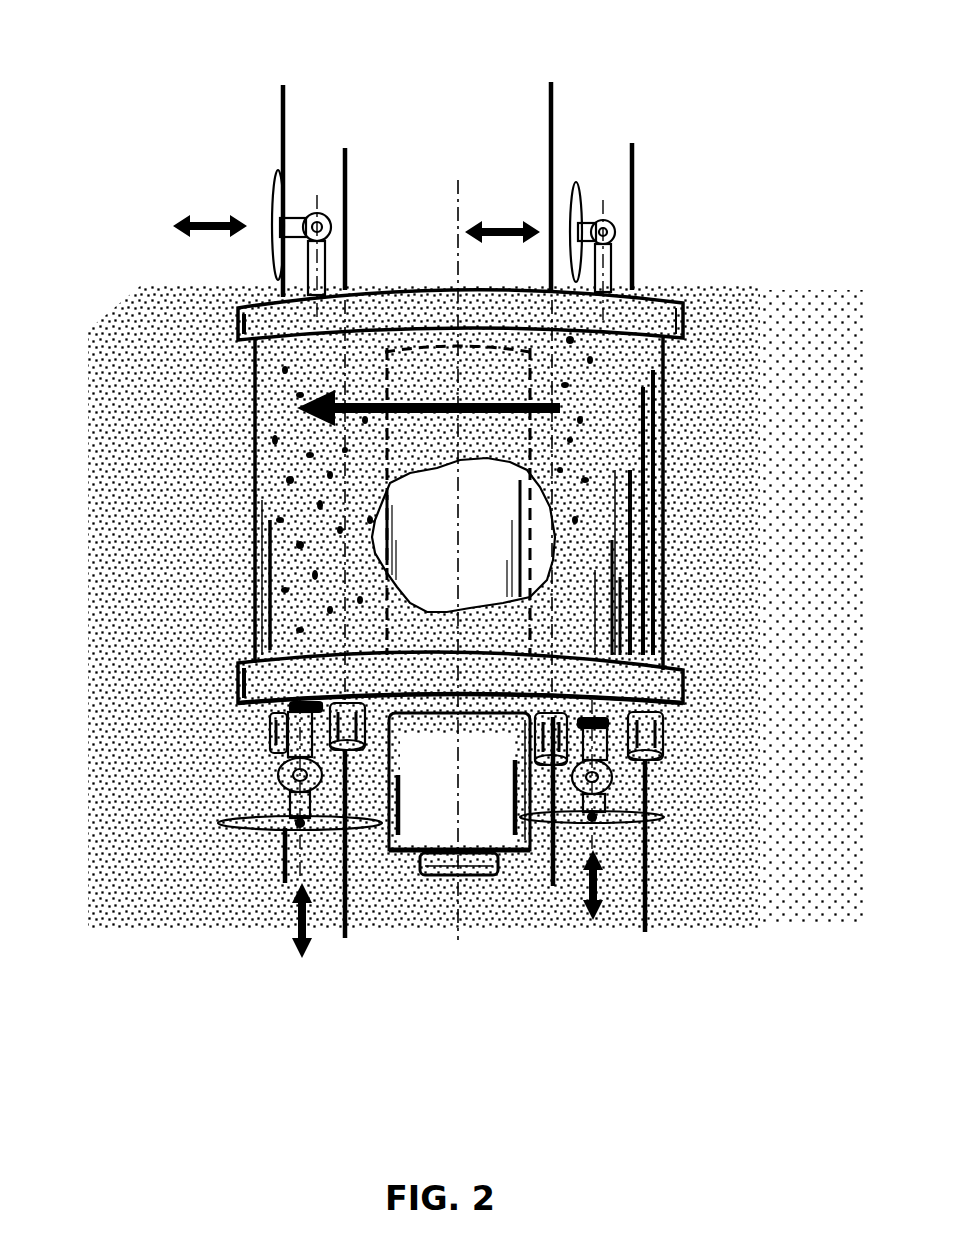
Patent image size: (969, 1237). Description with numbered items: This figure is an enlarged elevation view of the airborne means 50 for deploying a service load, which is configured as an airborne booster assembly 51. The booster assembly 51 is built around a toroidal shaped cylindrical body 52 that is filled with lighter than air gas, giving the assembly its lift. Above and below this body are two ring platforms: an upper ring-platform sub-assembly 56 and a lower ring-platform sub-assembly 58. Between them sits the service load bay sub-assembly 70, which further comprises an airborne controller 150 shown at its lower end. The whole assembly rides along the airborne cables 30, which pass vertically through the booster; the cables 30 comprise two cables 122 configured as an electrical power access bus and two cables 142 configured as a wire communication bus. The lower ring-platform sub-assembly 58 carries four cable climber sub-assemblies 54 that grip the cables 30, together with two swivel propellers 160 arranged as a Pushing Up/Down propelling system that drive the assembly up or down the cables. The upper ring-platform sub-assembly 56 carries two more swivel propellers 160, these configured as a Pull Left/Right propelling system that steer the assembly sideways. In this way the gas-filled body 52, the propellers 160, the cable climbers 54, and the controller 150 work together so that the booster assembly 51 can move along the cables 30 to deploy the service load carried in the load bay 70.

The airborne cables 30 is at (283, 884).
The airborne means for deploying a service load 50 is at (662, 593).
The booster assembly 51 is at (587, 508).
The toroidal shaped cylindrical body 52 is at (385, 530).
The cable climber sub-assemblies 54 is at (272, 738).
The upper ring-platform sub-assembly 56 is at (590, 322).
The lower ring-platform sub-assembly 58 is at (300, 672).
The service load bay sub-assembly 70 is at (415, 778).
The cables configured as an electrical power access bus 122 is at (345, 148).
The cables configured as a wire communication bus 142 is at (283, 85).
The airborne controller 150 is at (467, 877).
The swivel propellers 160 is at (275, 245).